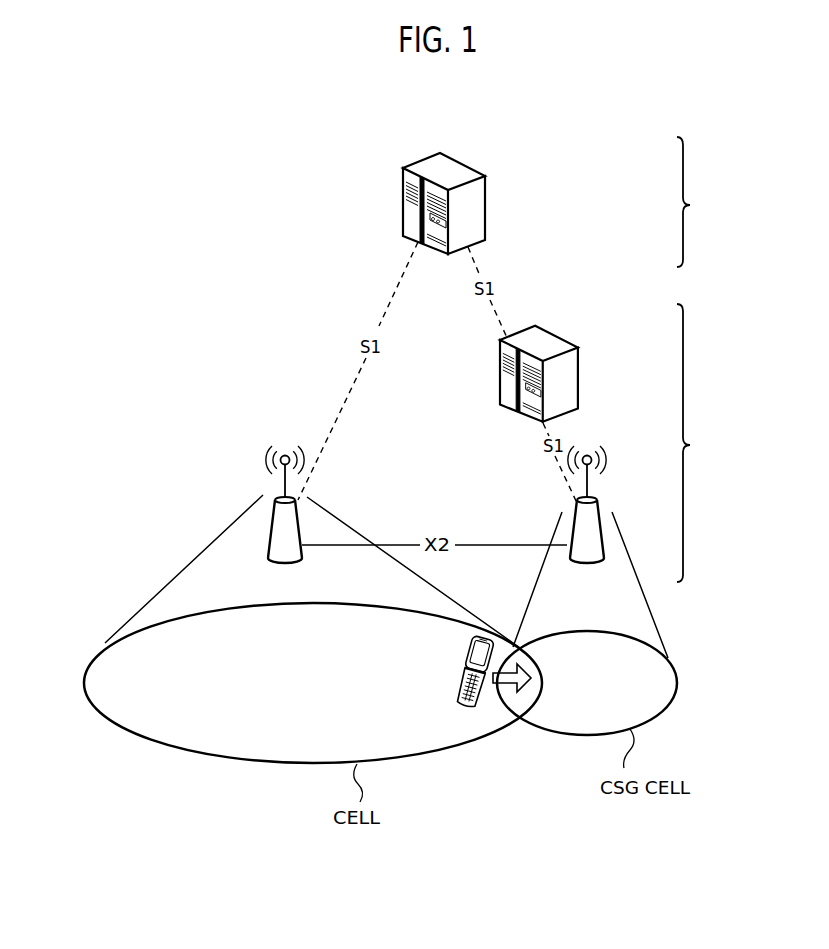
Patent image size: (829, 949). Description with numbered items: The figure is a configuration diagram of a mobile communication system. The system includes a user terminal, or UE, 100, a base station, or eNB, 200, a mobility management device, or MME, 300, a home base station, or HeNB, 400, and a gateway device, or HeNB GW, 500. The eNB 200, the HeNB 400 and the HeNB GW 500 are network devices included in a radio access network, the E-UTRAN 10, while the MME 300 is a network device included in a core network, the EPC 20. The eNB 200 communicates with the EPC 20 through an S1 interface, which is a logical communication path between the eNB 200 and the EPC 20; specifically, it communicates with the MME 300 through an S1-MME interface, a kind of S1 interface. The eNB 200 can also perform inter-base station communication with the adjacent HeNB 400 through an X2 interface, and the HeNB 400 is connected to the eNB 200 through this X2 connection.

The radio access network (E-UTRAN) 10 is at (726, 443).
The core network (EPC) 20 is at (703, 202).
The user terminal (UE) 100 is at (468, 648).
The base station (eNB) 200 is at (267, 551).
The mobility management device (MME) 300 is at (403, 197).
The home base station (HeNB) 400 is at (600, 507).
The gateway device (HeNB GW) 500 is at (579, 371).